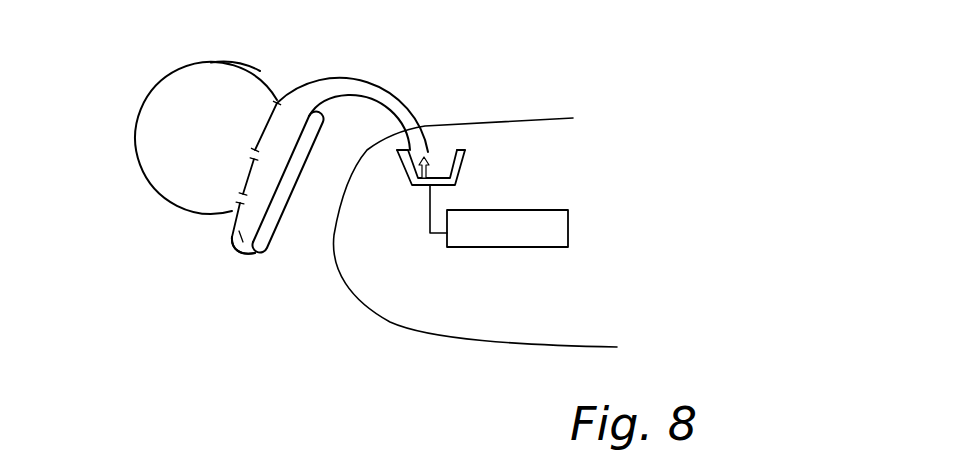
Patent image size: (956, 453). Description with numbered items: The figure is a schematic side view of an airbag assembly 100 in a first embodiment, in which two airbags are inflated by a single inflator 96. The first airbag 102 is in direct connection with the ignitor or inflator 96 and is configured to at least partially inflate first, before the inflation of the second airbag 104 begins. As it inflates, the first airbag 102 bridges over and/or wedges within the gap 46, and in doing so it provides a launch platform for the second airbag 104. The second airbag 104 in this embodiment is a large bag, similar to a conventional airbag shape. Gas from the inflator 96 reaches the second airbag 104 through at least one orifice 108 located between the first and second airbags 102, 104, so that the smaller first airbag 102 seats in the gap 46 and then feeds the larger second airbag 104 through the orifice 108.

The gap 46 is at (323, 160).
The inflator 96 is at (493, 248).
The airbag assembly 100 is at (173, 218).
The first airbag 102 is at (236, 256).
The second airbag 104 is at (247, 66).
The orifice 108 is at (272, 110).